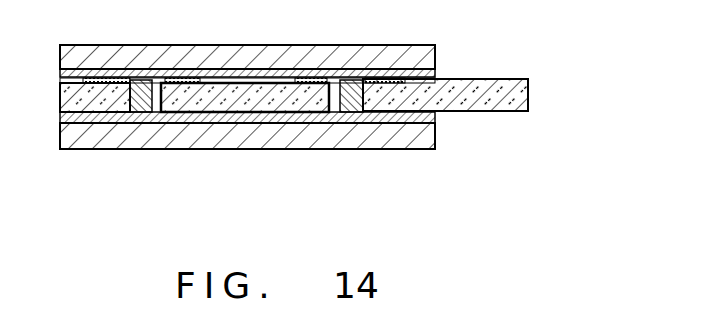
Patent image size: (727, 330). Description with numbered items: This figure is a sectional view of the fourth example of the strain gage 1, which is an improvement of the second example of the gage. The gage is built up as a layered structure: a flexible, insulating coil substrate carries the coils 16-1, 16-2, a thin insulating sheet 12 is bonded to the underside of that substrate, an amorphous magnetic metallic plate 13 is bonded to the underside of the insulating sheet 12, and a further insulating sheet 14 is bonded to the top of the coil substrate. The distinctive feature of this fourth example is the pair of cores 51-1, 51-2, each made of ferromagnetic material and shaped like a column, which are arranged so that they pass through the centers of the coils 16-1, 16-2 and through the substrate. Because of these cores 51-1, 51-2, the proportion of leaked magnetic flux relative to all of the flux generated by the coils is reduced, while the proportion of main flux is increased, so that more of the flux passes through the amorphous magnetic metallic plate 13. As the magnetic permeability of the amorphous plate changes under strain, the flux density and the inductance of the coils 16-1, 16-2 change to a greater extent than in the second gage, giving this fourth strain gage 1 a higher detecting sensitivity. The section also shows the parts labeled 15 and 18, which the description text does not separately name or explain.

The strain gage 1 is at (330, 97).
The insulating sheet 12 is at (197, 118).
The amorphous magnetic metallic plate 13 is at (297, 52).
The insulating sheet 14 is at (240, 75).
The lead / electrode layer 15 is at (474, 95).
The coil 16-1 is at (96, 79).
The coil 16-2 is at (398, 80).
The intermediate layer 18 is at (194, 139).
The core 51-1 is at (143, 80).
The core 51-2 is at (350, 82).